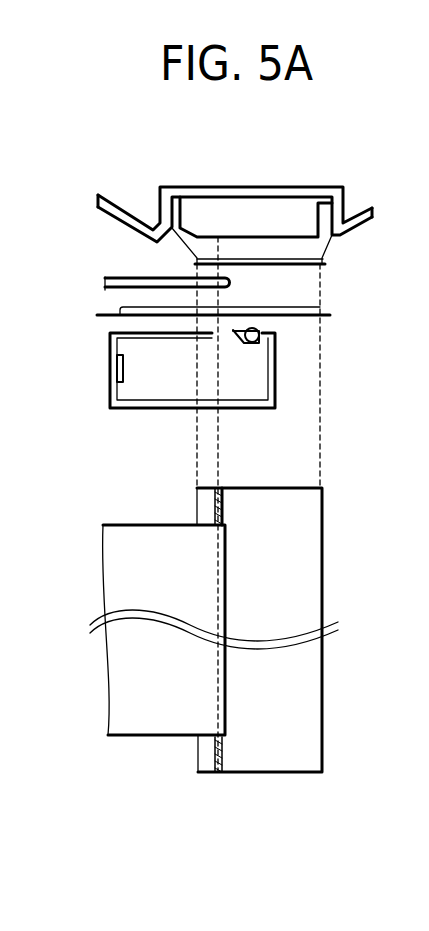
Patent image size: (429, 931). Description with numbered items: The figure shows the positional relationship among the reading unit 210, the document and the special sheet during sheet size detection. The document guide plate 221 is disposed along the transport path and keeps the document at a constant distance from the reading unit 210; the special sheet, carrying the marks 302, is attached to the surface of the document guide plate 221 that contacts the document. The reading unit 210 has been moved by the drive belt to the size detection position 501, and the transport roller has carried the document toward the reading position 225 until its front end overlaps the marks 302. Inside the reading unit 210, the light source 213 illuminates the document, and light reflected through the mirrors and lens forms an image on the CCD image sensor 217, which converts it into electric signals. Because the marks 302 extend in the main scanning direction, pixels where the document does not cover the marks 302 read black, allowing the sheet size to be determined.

The document guide plate 221 is at (260, 253).
The reading position 225 is at (120, 306).
The marks 302 is at (214, 498).
The CCD image sensor 217 is at (110, 367).
The reading unit 210 is at (108, 397).
The light source 213 is at (256, 343).
The size detection position 501 is at (216, 452).